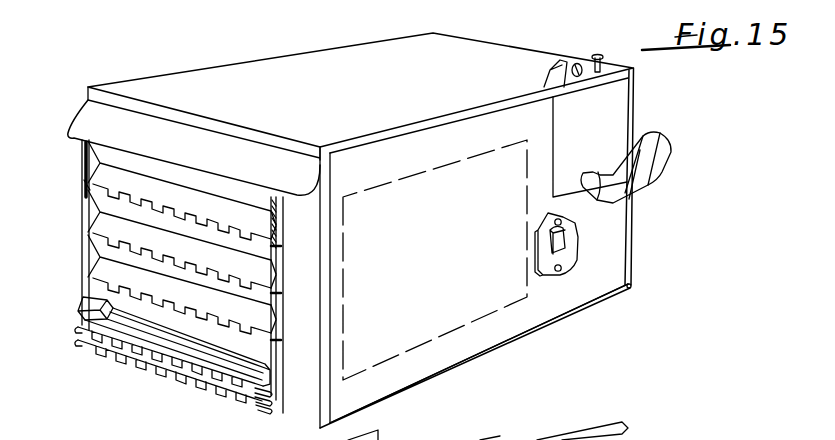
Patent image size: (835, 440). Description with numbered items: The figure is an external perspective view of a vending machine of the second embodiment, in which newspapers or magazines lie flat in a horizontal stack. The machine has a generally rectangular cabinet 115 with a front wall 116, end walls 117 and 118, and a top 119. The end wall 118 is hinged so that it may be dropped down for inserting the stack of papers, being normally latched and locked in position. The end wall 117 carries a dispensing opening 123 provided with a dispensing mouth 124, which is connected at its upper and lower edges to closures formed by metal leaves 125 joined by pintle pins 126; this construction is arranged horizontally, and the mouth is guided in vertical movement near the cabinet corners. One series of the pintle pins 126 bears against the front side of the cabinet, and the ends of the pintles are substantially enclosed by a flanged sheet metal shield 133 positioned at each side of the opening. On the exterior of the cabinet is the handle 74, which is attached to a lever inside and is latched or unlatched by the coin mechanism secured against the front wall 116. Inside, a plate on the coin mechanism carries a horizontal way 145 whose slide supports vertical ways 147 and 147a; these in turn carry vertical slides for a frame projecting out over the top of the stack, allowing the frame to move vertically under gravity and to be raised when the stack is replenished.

The top 119 is at (490, 53).
The handle 74 is at (653, 147).
The end wall 118 is at (633, 214).
The flanged sheet metal shield 133 is at (82, 160).
The pintle pins 126 is at (87, 185).
The metal leaves 125 is at (100, 250).
The dispensing opening 123 is at (100, 260).
The dispensing mouth 124 is at (100, 297).
The end wall 117 is at (295, 399).
The front wall 116 is at (574, 289).
The cabinet 115 is at (600, 262).
The vertical way 147 is at (394, 439).
The vertical way 147a is at (483, 422).
The horizontal way 145 is at (522, 439).